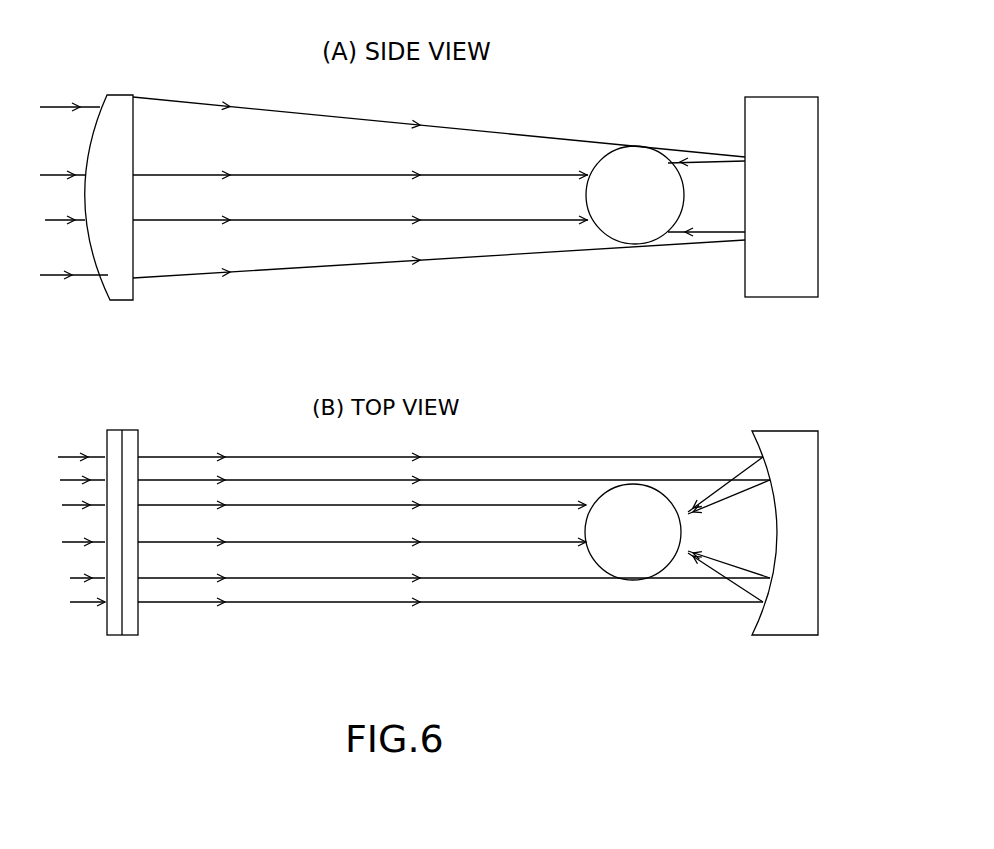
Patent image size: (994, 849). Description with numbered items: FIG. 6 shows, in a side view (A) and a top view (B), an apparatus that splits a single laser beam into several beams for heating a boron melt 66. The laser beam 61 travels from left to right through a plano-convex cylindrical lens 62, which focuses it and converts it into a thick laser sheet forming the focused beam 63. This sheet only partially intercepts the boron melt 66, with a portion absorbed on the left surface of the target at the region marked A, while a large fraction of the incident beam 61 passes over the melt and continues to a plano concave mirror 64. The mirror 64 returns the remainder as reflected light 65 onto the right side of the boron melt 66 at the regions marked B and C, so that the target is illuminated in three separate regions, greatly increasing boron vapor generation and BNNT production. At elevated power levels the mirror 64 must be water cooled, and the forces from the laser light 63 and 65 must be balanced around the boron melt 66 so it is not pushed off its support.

The laser beam 61 is at (76, 97).
The plano-convex cylindrical lens 62 is at (116, 93).
The focused beam 63 is at (230, 95).
The mirror 64 is at (785, 97).
The reflected beam 65 is at (705, 147).
The boron melt 66 is at (640, 146).